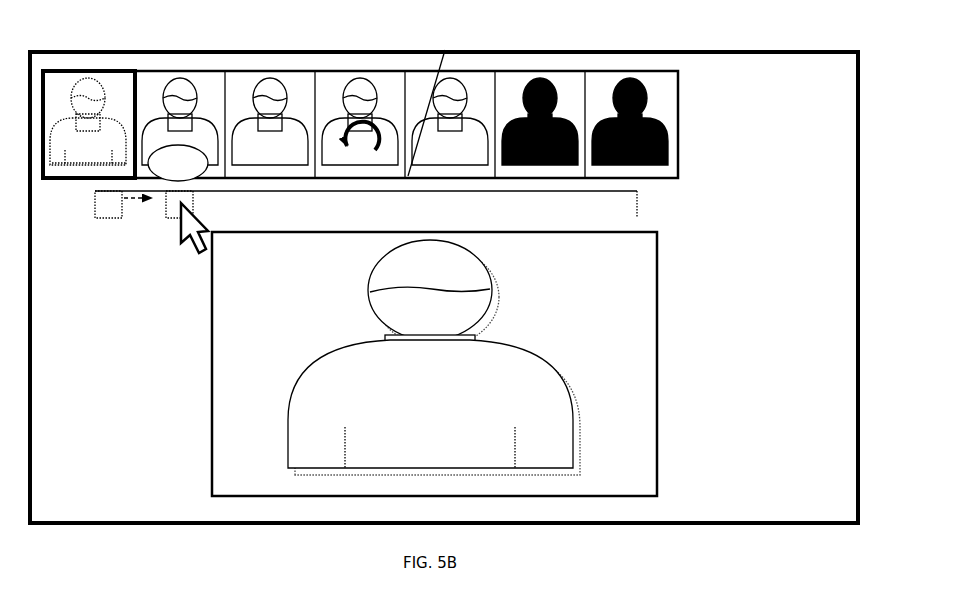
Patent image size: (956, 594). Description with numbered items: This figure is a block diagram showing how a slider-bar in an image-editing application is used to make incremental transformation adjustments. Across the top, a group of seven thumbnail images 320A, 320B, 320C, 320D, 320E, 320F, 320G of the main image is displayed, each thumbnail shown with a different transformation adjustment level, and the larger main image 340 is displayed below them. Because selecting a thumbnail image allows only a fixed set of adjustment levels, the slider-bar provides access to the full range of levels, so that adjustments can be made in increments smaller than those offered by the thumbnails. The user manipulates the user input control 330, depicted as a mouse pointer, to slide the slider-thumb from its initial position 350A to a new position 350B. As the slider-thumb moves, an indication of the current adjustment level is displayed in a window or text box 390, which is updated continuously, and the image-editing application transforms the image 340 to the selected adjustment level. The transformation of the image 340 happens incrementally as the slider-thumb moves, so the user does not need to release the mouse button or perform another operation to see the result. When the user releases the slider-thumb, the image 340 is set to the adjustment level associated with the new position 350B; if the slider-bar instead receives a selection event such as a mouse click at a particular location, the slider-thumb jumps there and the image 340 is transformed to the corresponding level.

The thumbnail image 320A is at (92, 70).
The thumbnail image 320B is at (182, 70).
The thumbnail image 320C is at (272, 70).
The thumbnail image 320D is at (363, 70).
The thumbnail image 320E is at (453, 70).
The thumbnail image 320F is at (545, 70).
The thumbnail image 320G is at (635, 70).
The user input control 330 is at (210, 229).
The image 340 is at (662, 364).
The slider-thumb position 350A is at (92, 207).
The slider-thumb position 350B is at (160, 213).
The window or text box 390 is at (212, 163).